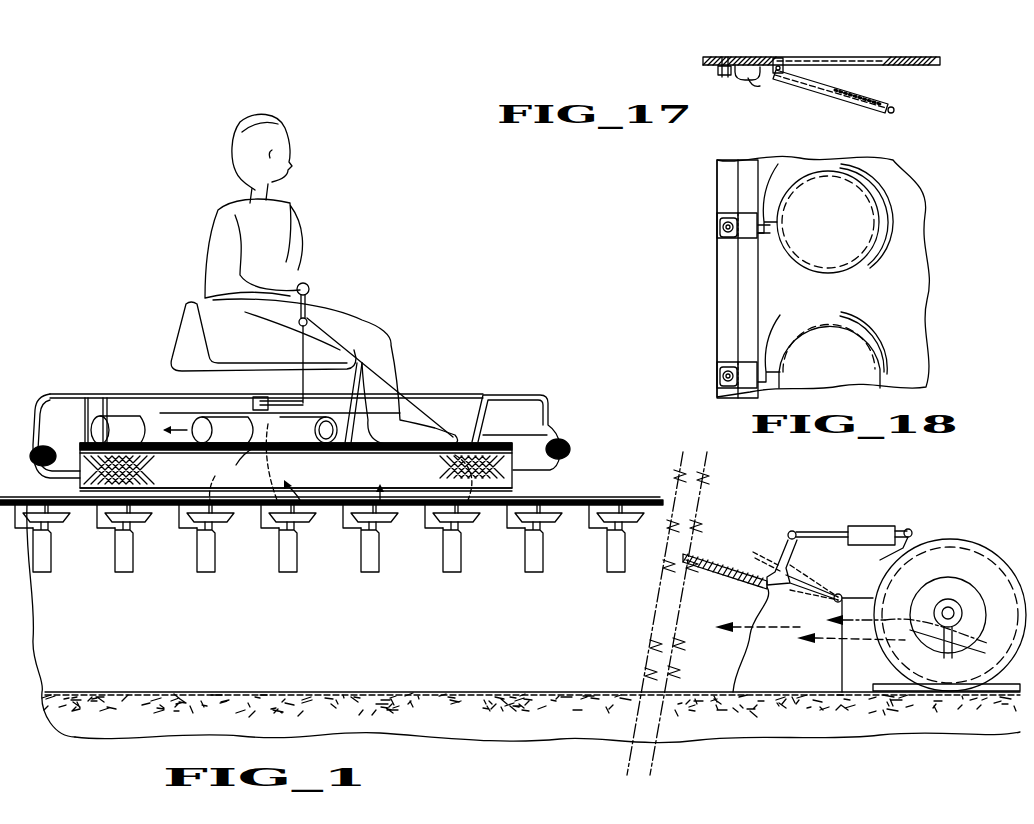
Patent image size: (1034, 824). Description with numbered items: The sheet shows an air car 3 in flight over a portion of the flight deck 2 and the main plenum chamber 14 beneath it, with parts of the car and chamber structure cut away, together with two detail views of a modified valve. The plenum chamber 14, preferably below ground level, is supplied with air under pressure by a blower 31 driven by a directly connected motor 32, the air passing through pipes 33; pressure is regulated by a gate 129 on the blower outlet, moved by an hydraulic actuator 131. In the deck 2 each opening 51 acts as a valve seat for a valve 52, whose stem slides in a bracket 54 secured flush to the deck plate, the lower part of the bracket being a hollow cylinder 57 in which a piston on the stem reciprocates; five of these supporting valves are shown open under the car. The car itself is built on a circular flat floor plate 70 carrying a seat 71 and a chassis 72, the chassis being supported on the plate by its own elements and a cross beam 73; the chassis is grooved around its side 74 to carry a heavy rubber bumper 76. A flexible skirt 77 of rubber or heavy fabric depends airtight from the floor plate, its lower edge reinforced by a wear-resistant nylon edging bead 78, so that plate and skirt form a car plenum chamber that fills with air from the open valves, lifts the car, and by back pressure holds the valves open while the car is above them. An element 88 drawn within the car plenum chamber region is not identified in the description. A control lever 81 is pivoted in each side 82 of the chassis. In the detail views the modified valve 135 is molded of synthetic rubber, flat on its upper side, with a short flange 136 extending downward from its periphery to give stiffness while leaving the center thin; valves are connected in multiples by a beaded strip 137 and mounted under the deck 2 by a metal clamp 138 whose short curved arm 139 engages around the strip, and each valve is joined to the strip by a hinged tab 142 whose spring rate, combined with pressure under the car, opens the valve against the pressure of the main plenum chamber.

In FIG. 1, the flight deck 2 is at (574, 501).
In FIG. 17, the flight deck 2 is at (915, 58).
In FIG. 18, the flight deck 2 is at (916, 320).
In FIG. 1, the air car 3 is at (150, 351).
In FIG. 1, the plenum chamber 14 is at (523, 613).
In FIG. 1, the blower 31 is at (944, 542).
In FIG. 1, the motor 32 is at (906, 682).
In FIG. 1, the pipes 33 is at (795, 680).
In FIG. 1, the opening 51 is at (103, 508).
In FIG. 17, the opening 51 is at (851, 58).
In FIG. 18, the opening 51 is at (877, 200).
In FIG. 1, the valve 52 is at (42, 500).
In FIG. 1, the bracket 54 is at (222, 530).
In FIG. 1, the hollow cylinder 57 is at (134, 558).
In FIG. 1, the floor plate 70 is at (150, 459).
In FIG. 1, the seat 71 is at (240, 383).
In FIG. 1, the chassis 72 is at (508, 394).
In FIG. 1, the cross beam 73 is at (109, 429).
In FIG. 1, the side 74 is at (46, 413).
In FIG. 1, the rubber bumper 76 is at (29, 458).
In FIG. 1, the flexible skirt 77 is at (431, 486).
In FIG. 1, the nylon edging bead 78 is at (514, 487).
In FIG. 1, the control lever 81 is at (311, 291).
In FIG. 1, the side of the chassis 82 is at (193, 303).
In FIG. 1, the air passage 88 is at (340, 462).
In FIG. 1, the gate 129 is at (750, 572).
In FIG. 1, the hydraulic actuator 131 is at (866, 527).
In FIG. 17, the valve 135 is at (853, 101).
In FIG. 18, the valve 135 is at (847, 221).
In FIG. 17, the short flange 136 is at (896, 106).
In FIG. 18, the short flange 136 is at (880, 236).
In FIG. 17, the strip 137 is at (755, 82).
In FIG. 18, the strip 137 is at (746, 314).
In FIG. 17, the metal clamp 138 is at (717, 69).
In FIG. 18, the metal clamp 138 is at (727, 240).
In FIG. 17, the short curved arm 139 is at (748, 84).
In FIG. 18, the short curved arm 139 is at (747, 240).
In FIG. 17, the hinged tab 142 is at (781, 60).
In FIG. 18, the hinged tab 142 is at (766, 220).